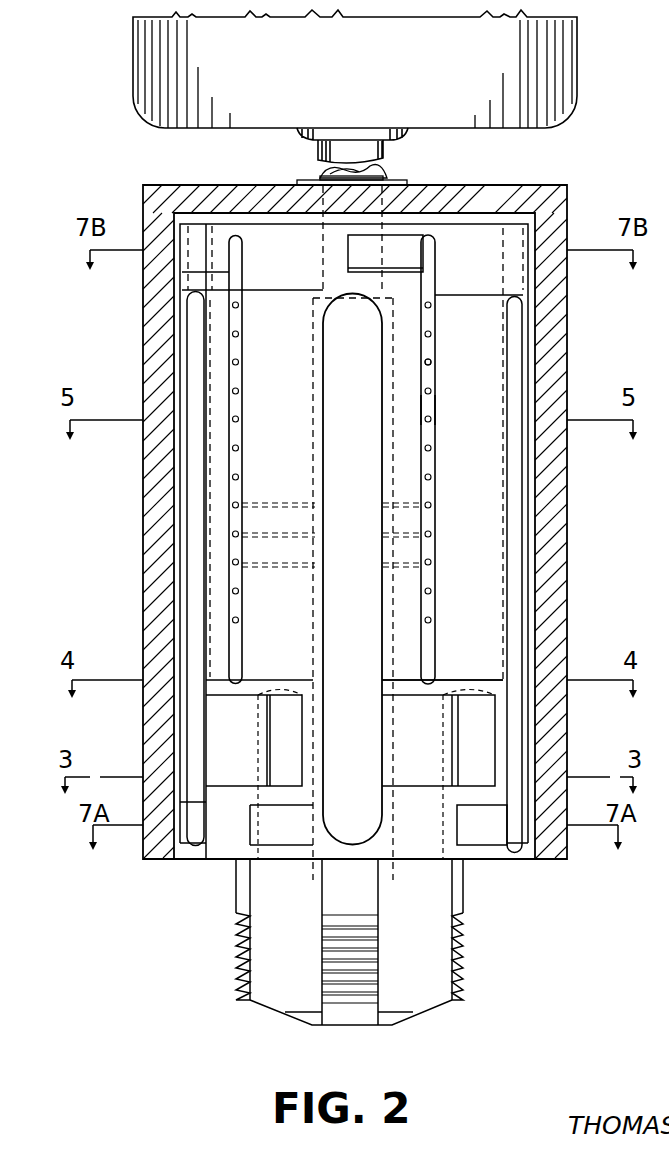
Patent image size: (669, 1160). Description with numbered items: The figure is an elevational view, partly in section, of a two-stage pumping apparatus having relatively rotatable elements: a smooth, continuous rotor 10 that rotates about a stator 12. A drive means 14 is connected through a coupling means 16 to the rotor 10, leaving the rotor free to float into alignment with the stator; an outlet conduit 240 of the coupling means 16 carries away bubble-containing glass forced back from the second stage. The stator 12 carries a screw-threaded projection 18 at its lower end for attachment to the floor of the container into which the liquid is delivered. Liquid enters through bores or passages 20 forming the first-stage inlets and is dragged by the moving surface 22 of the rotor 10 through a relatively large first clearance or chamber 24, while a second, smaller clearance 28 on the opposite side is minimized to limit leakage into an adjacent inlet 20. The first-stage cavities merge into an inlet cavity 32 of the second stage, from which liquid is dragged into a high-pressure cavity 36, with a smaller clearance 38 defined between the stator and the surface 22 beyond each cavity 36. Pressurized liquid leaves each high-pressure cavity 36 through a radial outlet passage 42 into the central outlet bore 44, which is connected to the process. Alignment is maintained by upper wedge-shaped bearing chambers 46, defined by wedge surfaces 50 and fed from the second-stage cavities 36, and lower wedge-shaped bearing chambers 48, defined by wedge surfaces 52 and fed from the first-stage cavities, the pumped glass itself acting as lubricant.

The rotor 10 is at (567, 317).
The stator 12 is at (508, 860).
The drive means 14 is at (545, 128).
The coupling means 16 is at (392, 172).
The screw-threaded projection 18 is at (463, 948).
The bores or passages 20 is at (258, 746).
The moving surface 22 is at (545, 276).
The first clearance or chamber 24 is at (430, 705).
The second smaller clearance 28 is at (310, 692).
The inlet cavity 32 is at (398, 455).
The high-pressure cavity 36 is at (433, 403).
The second smaller clearance 38 is at (410, 323).
The radial outlet passage 42 is at (431, 363).
The central outlet bore 44 is at (312, 1015).
The upper wedge-shaped bearing chamber 46 is at (348, 249).
The lower wedge-shaped bearing chamber 48 is at (270, 806).
The wedge surface 50 is at (373, 271).
The wedge surface 52 is at (270, 842).
The outlet conduit 240 is at (330, 175).